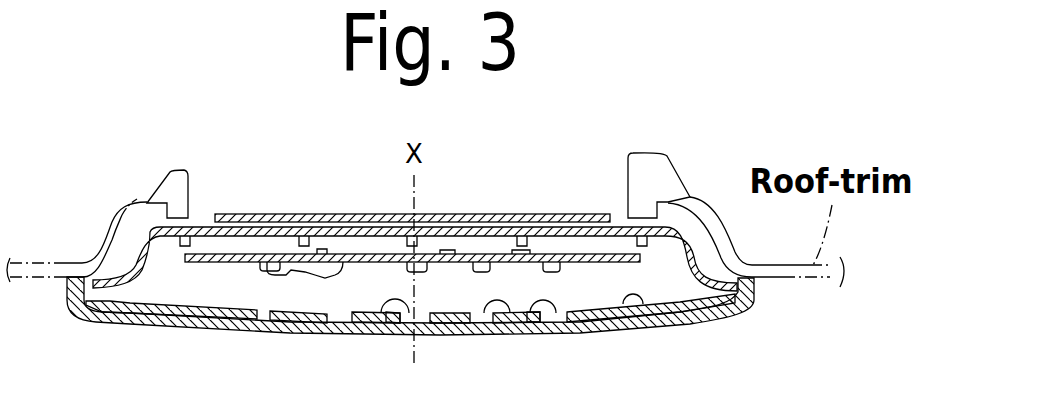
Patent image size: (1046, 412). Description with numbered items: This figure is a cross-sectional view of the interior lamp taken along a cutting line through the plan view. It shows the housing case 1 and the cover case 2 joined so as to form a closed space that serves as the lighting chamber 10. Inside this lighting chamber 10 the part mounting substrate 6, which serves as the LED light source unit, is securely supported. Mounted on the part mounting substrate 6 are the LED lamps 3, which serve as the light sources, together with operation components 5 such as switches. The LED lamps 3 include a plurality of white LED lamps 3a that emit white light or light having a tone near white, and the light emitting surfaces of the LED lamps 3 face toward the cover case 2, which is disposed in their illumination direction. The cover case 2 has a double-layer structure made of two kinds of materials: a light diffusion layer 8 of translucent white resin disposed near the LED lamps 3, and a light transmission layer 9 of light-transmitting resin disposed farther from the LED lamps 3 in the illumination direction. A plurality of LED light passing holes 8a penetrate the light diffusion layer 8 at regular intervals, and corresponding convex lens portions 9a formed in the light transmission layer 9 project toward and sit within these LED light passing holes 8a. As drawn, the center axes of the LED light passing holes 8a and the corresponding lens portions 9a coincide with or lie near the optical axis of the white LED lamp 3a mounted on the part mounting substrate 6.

The housing case 1 is at (147, 250).
The cover case 2 is at (110, 335).
The LED lamps 3 is at (415, 267).
The white LED lamps 3a is at (437, 268).
The operation components 5 is at (305, 250).
The part mounting substrate 6 is at (210, 254).
The light diffusion layer 8 is at (638, 325).
The LED light passing holes 8a is at (397, 313).
The light transmission layer 9 is at (690, 326).
The lens portions 9a is at (473, 314).
The lighting chamber 10 is at (183, 280).